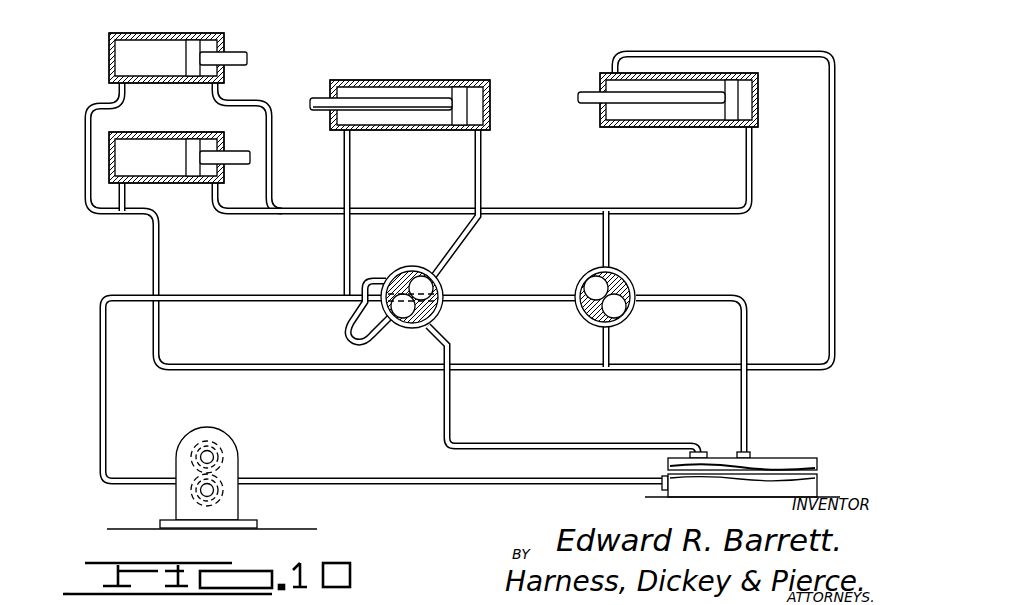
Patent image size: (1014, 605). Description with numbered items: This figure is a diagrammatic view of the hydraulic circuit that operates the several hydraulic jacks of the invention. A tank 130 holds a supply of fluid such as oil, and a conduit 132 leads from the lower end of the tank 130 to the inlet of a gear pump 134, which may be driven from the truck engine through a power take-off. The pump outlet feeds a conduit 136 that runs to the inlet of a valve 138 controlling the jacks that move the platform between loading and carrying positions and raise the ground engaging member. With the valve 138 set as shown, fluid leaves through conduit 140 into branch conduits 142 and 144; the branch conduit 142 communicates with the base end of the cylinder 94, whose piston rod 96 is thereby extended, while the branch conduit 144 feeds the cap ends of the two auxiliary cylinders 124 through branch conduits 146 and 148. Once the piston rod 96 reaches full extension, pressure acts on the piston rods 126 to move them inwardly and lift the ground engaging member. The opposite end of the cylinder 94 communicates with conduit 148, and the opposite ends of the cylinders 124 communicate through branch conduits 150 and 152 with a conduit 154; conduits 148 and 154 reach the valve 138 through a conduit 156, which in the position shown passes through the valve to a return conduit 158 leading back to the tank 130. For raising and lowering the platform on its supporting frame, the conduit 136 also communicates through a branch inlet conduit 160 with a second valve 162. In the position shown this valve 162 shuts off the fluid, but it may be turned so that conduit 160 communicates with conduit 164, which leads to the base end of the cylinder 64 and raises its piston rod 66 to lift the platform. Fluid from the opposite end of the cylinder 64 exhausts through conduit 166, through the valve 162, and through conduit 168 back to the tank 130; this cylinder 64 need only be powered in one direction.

The cylinder 64 is at (400, 80).
The piston rod 66 is at (318, 98).
The cylinder 94 is at (690, 127).
The piston rod 96 is at (592, 103).
The cylinder 124 is at (147, 33).
The piston rod 126 is at (237, 53).
The tank 130 is at (820, 471).
The conduit 132 is at (472, 486).
The gear pump 134 is at (207, 431).
The conduit 136 is at (225, 298).
The valve 138 is at (630, 281).
The conduit 140 is at (610, 241).
The branch conduit 142 is at (640, 211).
The branch conduit 144 is at (525, 211).
The branch conduit 146 is at (250, 214).
The branch conduit 148 is at (838, 125).
The branch conduit 150 is at (88, 199).
The branch conduit 152 is at (125, 200).
The conduit 154 is at (156, 264).
The conduit 156 is at (610, 345).
The return conduit 158 is at (725, 297).
The branch inlet conduit 160 is at (370, 273).
The valve 162 is at (445, 282).
The conduit 164 is at (481, 239).
The conduit 166 is at (351, 186).
The conduit 168 is at (452, 350).